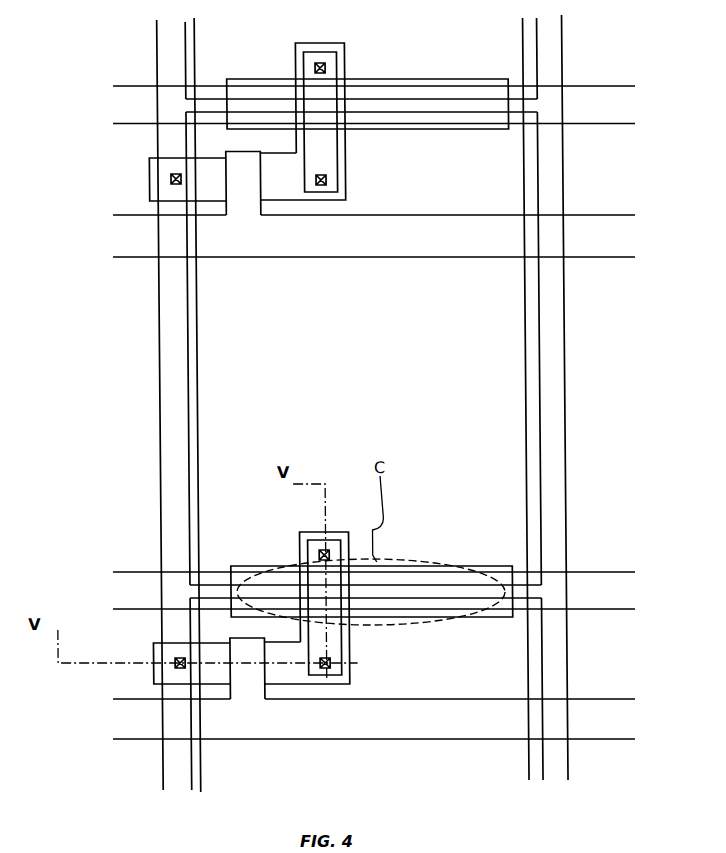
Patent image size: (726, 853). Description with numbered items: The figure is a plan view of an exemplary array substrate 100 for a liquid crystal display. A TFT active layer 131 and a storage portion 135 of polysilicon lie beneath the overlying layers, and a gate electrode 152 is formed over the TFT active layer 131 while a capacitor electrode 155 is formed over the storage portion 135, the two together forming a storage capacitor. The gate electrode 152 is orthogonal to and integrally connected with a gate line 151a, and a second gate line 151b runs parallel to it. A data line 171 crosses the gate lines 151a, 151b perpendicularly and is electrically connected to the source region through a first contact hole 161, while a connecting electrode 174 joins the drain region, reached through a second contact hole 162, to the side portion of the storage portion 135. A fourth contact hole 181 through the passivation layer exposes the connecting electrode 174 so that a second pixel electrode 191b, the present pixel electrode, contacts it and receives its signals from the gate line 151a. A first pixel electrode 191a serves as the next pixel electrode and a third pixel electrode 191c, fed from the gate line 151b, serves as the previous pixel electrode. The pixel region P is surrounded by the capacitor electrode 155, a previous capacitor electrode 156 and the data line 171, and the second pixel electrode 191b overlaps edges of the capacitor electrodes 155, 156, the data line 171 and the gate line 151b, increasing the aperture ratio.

The array substrate 100 is at (98, 322).
The TFT active layer 131 is at (243, 690).
The storage portion 135 is at (454, 567).
The gate line 151a is at (413, 740).
The gate line 151b is at (391, 258).
The gate electrode 152 is at (245, 151).
The capacitor electrode 155 is at (404, 573).
The previous capacitor electrode 156 is at (403, 79).
The first contact hole 161 is at (169, 667).
The second contact hole 162 is at (324, 670).
The data line 171 is at (154, 417).
The connecting electrode 174 is at (339, 622).
The fourth contact hole 181 is at (324, 549).
The first pixel electrode 191a is at (537, 676).
The second pixel electrode 191b is at (540, 349).
The third pixel electrode 191c is at (523, 45).
The pixel region P is at (486, 299).